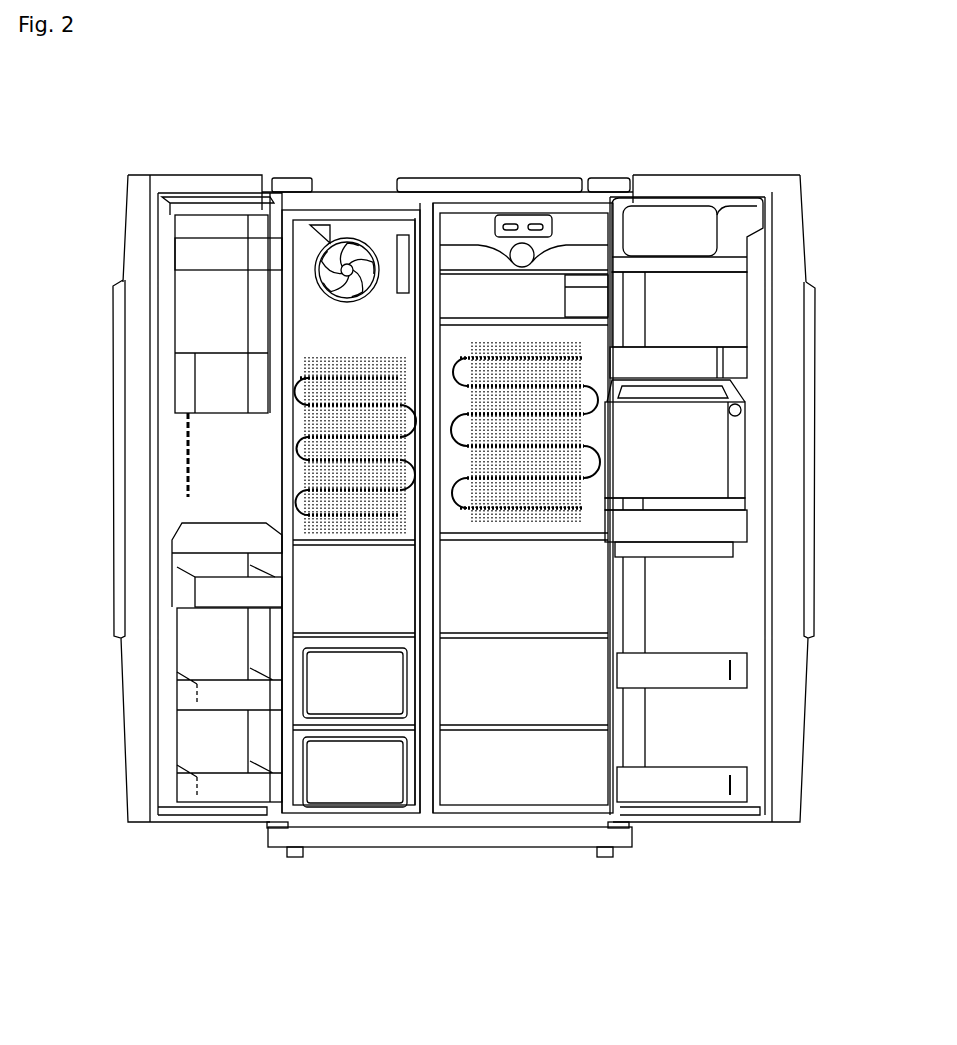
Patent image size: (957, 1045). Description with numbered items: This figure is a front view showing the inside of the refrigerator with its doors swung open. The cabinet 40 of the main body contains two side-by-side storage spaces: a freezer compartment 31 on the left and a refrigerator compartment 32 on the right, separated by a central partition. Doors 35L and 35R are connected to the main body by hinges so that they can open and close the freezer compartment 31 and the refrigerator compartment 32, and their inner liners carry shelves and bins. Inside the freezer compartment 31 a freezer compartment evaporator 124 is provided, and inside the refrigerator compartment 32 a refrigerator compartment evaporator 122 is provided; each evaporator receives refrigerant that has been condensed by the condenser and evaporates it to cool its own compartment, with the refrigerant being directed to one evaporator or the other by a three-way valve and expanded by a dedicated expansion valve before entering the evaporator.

The refrigerator cabinet 40 is at (532, 160).
The freezer compartment 31 is at (378, 567).
The refrigerator compartment 32 is at (555, 597).
The door 35L is at (119, 716).
The door 35R is at (810, 703).
The refrigerator compartment evaporator 122 is at (583, 480).
The freezer compartment evaporator 124 is at (310, 470).